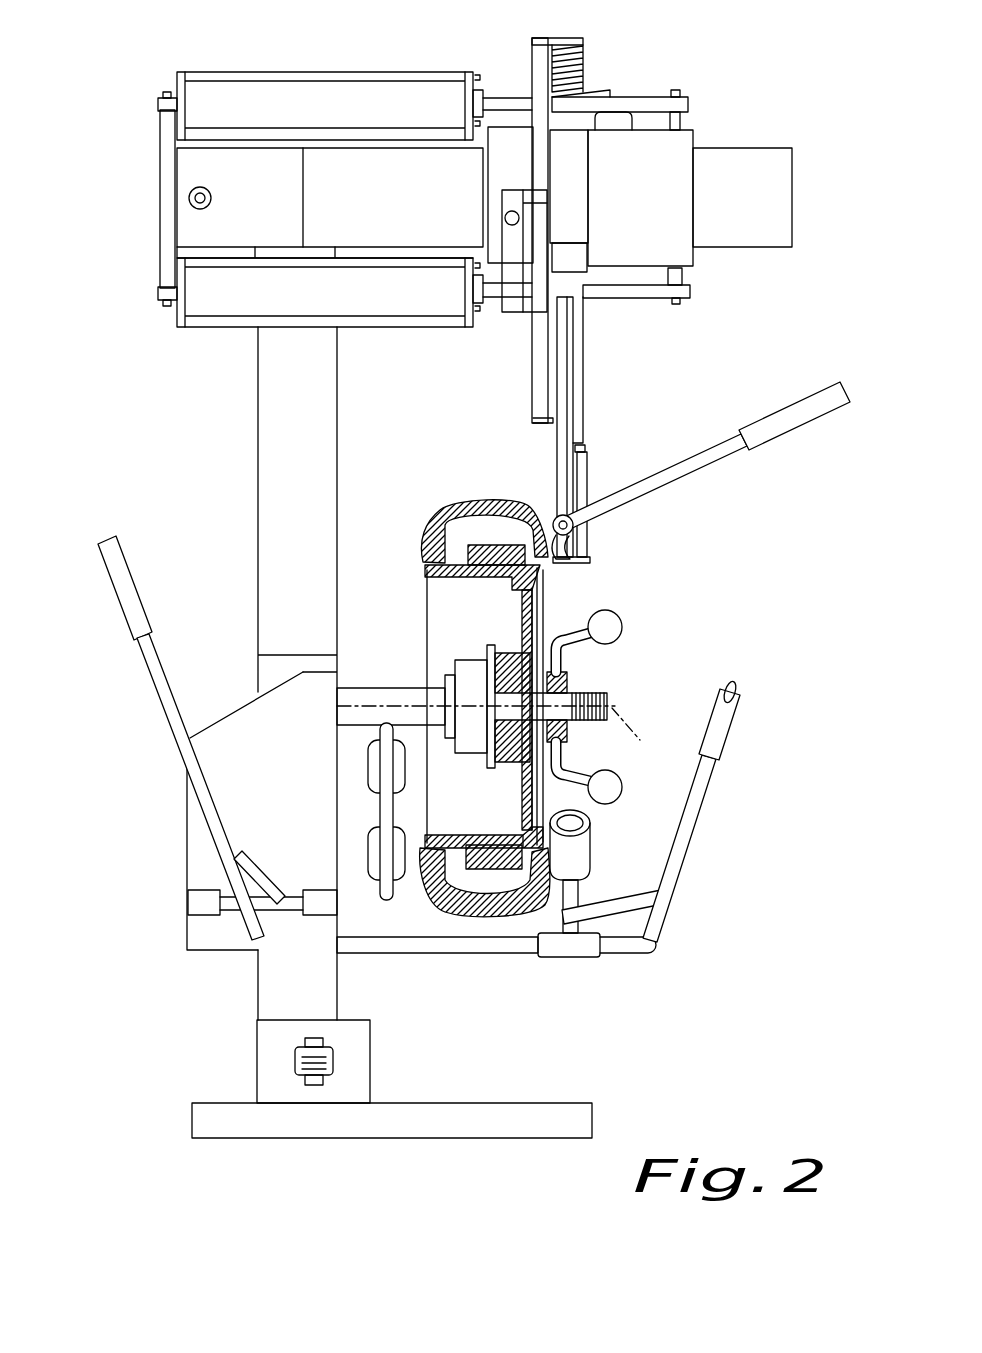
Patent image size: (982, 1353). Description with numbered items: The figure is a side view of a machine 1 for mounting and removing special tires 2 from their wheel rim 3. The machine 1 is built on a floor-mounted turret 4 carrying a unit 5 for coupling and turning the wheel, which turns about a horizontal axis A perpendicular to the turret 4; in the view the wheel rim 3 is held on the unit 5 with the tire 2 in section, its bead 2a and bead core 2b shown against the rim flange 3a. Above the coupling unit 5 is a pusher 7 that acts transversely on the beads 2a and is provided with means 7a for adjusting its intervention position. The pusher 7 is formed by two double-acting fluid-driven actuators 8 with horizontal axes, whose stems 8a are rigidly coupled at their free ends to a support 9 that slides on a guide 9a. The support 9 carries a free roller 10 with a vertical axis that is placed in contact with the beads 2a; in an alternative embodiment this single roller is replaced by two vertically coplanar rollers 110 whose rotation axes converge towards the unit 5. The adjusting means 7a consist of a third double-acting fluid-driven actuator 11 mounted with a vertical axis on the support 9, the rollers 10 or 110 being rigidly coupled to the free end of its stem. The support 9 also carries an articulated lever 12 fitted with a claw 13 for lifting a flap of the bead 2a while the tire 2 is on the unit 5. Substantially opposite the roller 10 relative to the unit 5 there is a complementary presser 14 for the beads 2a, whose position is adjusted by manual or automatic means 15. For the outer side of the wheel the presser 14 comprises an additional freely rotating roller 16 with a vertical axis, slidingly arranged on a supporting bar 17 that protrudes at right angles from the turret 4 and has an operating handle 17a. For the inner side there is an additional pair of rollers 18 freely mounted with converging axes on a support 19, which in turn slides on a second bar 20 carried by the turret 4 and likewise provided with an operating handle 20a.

The machine for mounting and removing special tires 1 is at (150, 62).
The special tire 2 is at (490, 500).
The bead 2a is at (560, 567).
The bead core 2b is at (477, 547).
The wheel rim 3 is at (425, 613).
The rim flange 3a is at (443, 910).
The floor-mounted turret 4 is at (262, 503).
The unit for coupling and turning wheels 5 is at (622, 679).
The horizontal axis A is at (638, 741).
The pusher 7 is at (146, 214).
The means for adjusting intervention position 7a is at (766, 88).
The double-acting fluid-driven actuator 8 is at (273, 97).
The stem 8a is at (510, 102).
The support 9 is at (670, 158).
The guide 9a is at (195, 173).
The free roller 10 is at (640, 466).
The rollers 110 is at (587, 472).
The third double-acting fluid-driven actuator 11 is at (570, 172).
The lever 12 is at (730, 457).
The claw 13 is at (573, 530).
The complementary presser 14 is at (672, 955).
The manual or automatic means 15 is at (571, 965).
The additional roller 16 is at (577, 863).
The supporting bar 17 is at (363, 957).
The operating handle 17a is at (697, 803).
The additional pair of rollers 18 is at (363, 763).
The support 19 is at (373, 807).
The second bar 20 is at (343, 892).
The operating handle 20a is at (145, 667).